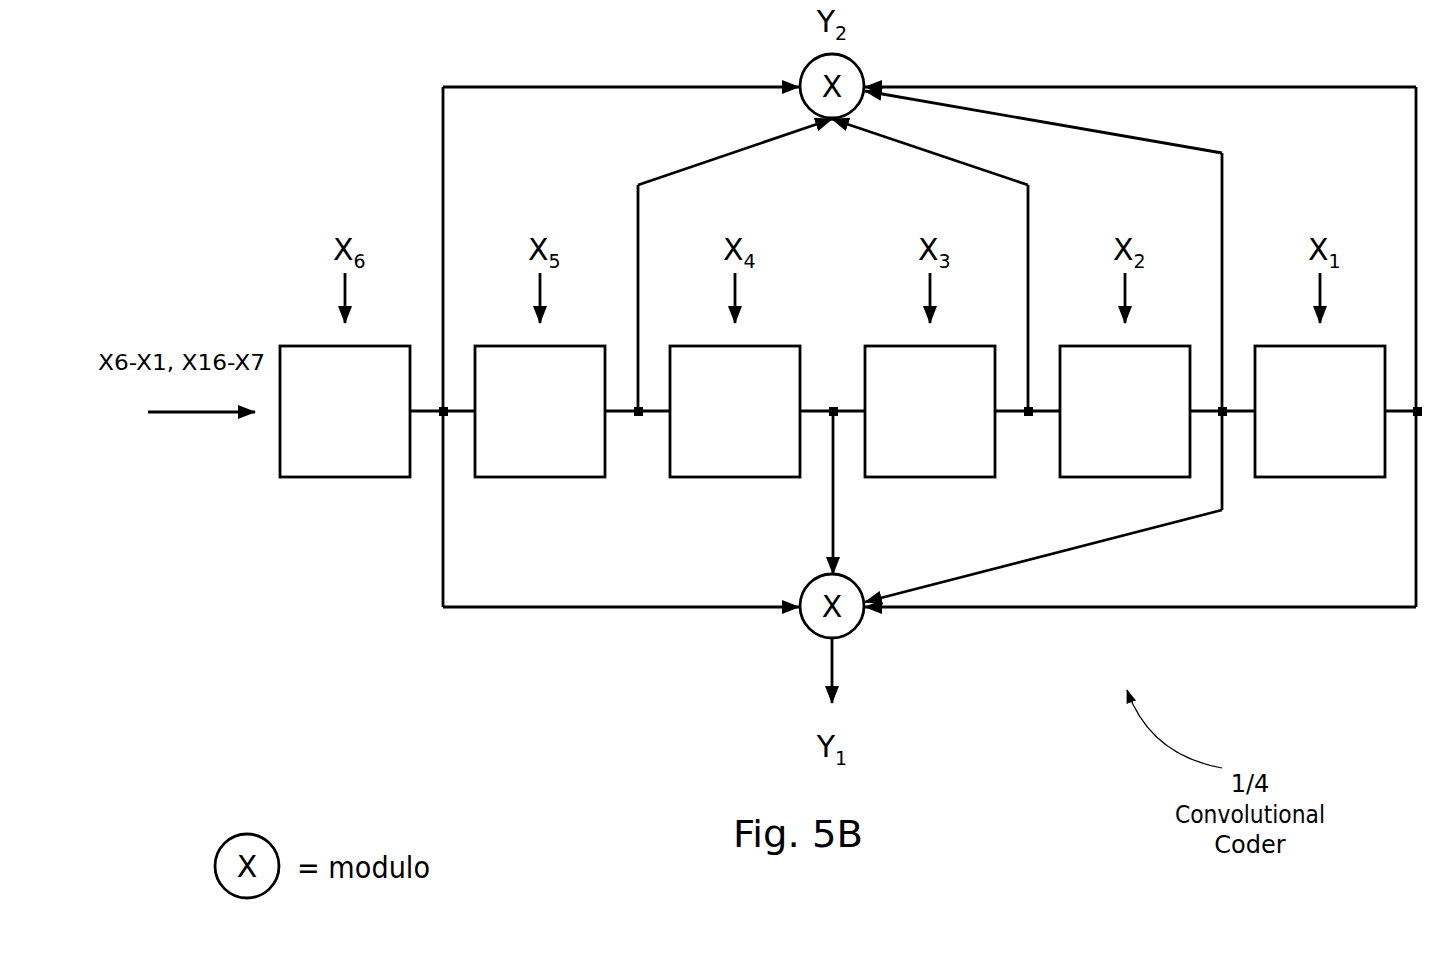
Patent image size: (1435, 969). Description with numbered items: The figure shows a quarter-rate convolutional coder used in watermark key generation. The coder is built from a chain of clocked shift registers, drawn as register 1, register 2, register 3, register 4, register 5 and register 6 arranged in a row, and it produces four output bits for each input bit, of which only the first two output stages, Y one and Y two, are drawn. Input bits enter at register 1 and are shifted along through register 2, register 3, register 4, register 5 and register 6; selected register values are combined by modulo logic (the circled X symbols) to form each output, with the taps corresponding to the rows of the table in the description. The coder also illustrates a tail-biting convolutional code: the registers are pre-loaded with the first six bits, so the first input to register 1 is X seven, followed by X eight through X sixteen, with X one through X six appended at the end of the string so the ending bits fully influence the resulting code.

The register 1 is at (345, 411).
The register 2 is at (540, 411).
The register 3 is at (735, 411).
The register 4 is at (930, 411).
The register 5 is at (1125, 411).
The register 6 is at (1320, 411).